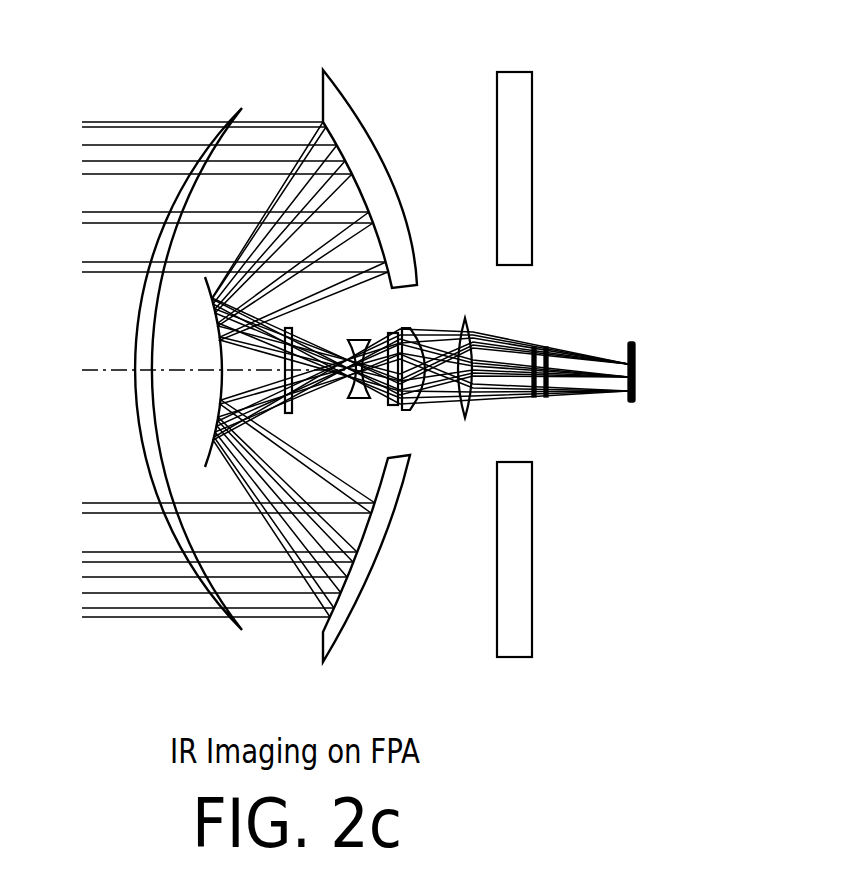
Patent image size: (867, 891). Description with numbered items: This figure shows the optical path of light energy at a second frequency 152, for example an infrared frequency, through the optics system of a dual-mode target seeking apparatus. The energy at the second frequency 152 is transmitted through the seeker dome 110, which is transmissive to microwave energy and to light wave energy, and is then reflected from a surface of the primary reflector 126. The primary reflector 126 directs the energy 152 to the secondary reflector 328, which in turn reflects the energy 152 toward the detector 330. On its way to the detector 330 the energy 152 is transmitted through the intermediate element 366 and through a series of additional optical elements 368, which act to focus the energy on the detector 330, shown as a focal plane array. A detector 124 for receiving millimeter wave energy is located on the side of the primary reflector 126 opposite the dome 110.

The light energy at a second frequency 152 is at (145, 118).
The seeker dome 110 is at (230, 115).
The primary reflector 126 is at (343, 107).
The detector for receiving millimeter wave energy 124 is at (520, 108).
The secondary reflector 328 is at (335, 325).
The intermediate element 366 is at (371, 348).
The series of additional optical elements 368 is at (347, 417).
The detector 330 is at (637, 398).